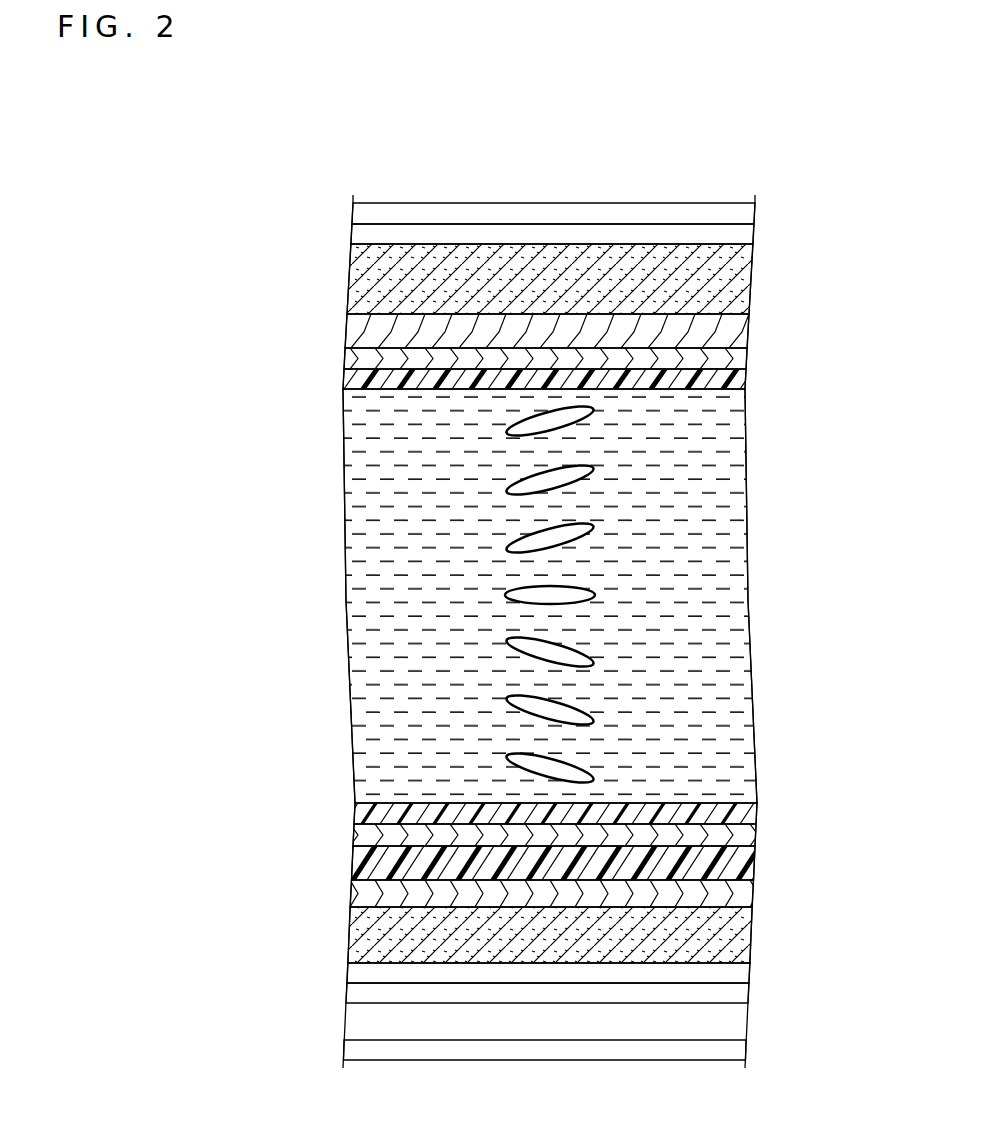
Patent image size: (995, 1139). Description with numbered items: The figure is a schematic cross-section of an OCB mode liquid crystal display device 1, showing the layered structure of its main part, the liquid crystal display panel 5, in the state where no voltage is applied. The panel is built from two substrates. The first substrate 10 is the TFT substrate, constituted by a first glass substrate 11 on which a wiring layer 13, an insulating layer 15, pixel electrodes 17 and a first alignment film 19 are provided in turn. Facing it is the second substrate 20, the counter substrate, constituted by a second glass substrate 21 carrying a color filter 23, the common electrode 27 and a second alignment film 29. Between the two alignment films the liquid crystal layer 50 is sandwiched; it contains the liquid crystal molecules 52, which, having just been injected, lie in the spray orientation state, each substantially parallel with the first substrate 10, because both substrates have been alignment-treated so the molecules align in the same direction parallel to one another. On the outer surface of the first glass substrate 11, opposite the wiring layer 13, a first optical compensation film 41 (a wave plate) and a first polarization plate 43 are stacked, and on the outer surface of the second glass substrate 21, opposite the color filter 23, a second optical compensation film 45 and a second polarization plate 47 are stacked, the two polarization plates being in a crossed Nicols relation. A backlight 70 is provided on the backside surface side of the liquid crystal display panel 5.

The liquid crystal display device 1 is at (248, 165).
The liquid crystal display panel 5 is at (918, 245).
The first substrate 10 is at (843, 825).
The first glass substrate 11 is at (730, 940).
The wiring layer 13 is at (730, 893).
The insulating layer 15 is at (735, 870).
The pixel electrodes 17 is at (735, 838).
The first alignment film 19 is at (735, 812).
The second substrate 20 is at (843, 248).
The second glass substrate 21 is at (727, 283).
The color filter 23 is at (727, 327).
The common electrode 27 is at (730, 357).
The second alignment film 29 is at (730, 378).
The first optical compensation film 41 is at (727, 973).
The first polarization plate 43 is at (727, 992).
The second optical compensation film 45 is at (727, 237).
The second polarization plate 47 is at (727, 212).
The liquid crystal layer 50 is at (727, 477).
The liquid crystal molecules 52 is at (593, 595).
The backlight 70 is at (727, 1057).